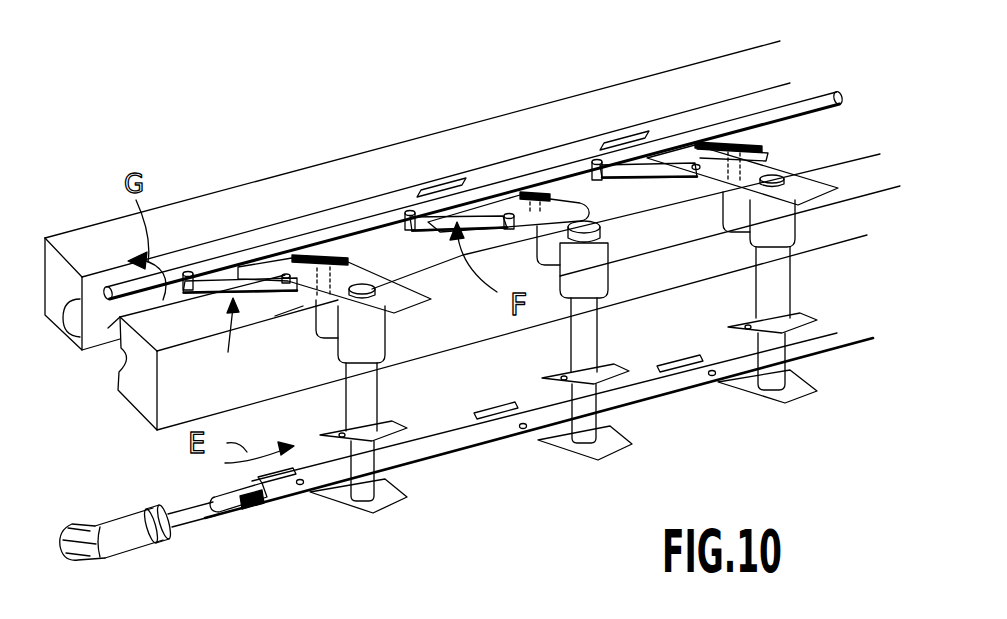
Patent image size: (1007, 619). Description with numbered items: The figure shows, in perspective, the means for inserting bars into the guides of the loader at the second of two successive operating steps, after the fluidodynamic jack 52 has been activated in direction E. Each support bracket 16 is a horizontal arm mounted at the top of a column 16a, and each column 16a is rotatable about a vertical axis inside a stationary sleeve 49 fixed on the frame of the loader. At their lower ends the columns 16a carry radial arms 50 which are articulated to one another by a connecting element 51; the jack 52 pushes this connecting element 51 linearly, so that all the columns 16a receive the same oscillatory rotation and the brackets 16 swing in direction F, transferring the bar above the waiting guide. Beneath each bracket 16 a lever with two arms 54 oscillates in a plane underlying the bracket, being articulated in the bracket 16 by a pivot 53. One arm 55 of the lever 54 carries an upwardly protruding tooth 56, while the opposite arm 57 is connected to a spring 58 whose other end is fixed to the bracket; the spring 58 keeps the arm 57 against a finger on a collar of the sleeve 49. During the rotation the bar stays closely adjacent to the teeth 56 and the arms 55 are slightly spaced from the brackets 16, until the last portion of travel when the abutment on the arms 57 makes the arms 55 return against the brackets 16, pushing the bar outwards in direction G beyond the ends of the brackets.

The support bracket 16 is at (723, 173).
The column 16a is at (775, 373).
The stationary sleeve 49 is at (780, 282).
The radial arm 50 is at (748, 384).
The connecting element 51 is at (430, 447).
The fluidodynamic jack 52 is at (133, 540).
The pivot 53 is at (287, 297).
The lever with two arms 54 is at (228, 347).
The arm 55 is at (212, 296).
The tooth 56 is at (186, 272).
The opposite arm 57 is at (385, 265).
The spring 58 is at (310, 258).